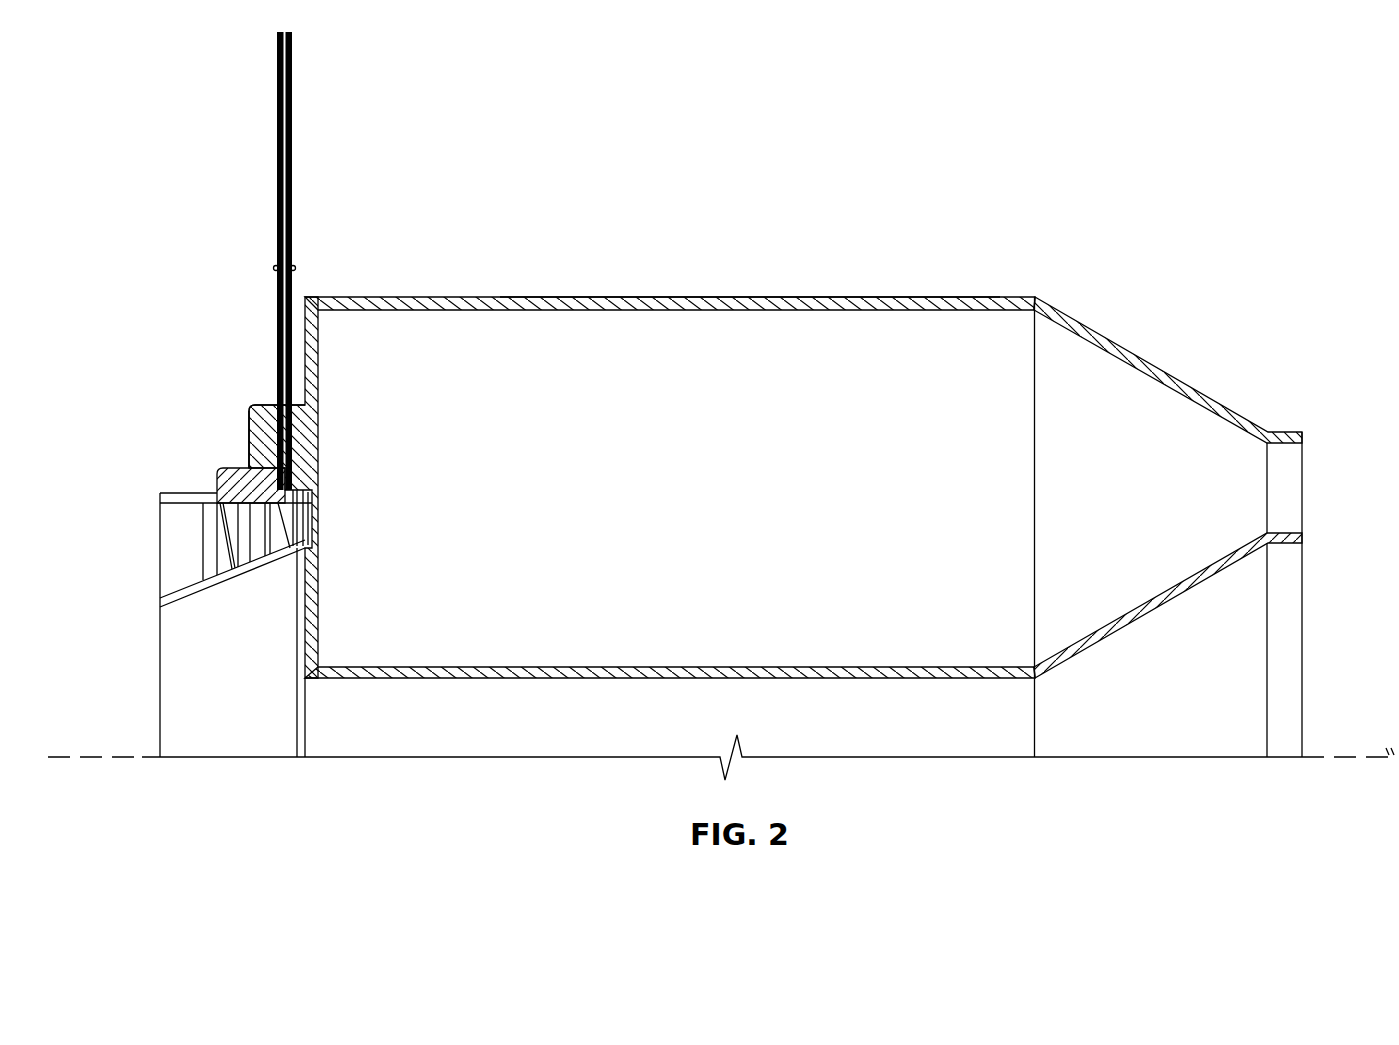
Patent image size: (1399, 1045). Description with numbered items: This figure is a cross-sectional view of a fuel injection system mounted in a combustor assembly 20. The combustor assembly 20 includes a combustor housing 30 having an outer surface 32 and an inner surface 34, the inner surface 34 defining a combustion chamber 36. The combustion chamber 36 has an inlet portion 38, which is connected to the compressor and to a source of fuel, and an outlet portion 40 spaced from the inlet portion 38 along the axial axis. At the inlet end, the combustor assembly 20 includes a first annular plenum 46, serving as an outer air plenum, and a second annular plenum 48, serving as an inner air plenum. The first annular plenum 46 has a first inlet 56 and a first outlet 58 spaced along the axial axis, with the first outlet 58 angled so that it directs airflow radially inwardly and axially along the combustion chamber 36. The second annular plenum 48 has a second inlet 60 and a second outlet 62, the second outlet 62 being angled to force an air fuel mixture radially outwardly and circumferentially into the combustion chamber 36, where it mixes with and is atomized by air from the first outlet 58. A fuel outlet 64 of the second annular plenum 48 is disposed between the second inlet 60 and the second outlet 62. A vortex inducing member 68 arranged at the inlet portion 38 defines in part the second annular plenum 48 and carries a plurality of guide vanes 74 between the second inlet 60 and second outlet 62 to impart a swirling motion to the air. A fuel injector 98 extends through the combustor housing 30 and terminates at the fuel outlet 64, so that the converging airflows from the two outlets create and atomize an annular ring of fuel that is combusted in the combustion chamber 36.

The combustor assembly 20 is at (437, 280).
The combustor housing 30 is at (654, 294).
The outer surface 32 is at (785, 296).
The inner surface 34 is at (786, 665).
The combustion chamber 36 is at (784, 445).
The inlet portion 38 is at (243, 436).
The outlet portion 40 is at (1320, 516).
The first annular plenum 46 is at (265, 440).
The second annular plenum 48 is at (174, 522).
The first inlet 56 is at (246, 448).
The first outlet 58 is at (303, 464).
The second inlet 60 is at (159, 538).
The second outlet 62 is at (320, 538).
The fuel outlet 64 is at (314, 513).
The vortex inducing member 68 is at (260, 575).
The guide vanes 74 is at (237, 545).
The fuel injector 98 is at (273, 124).